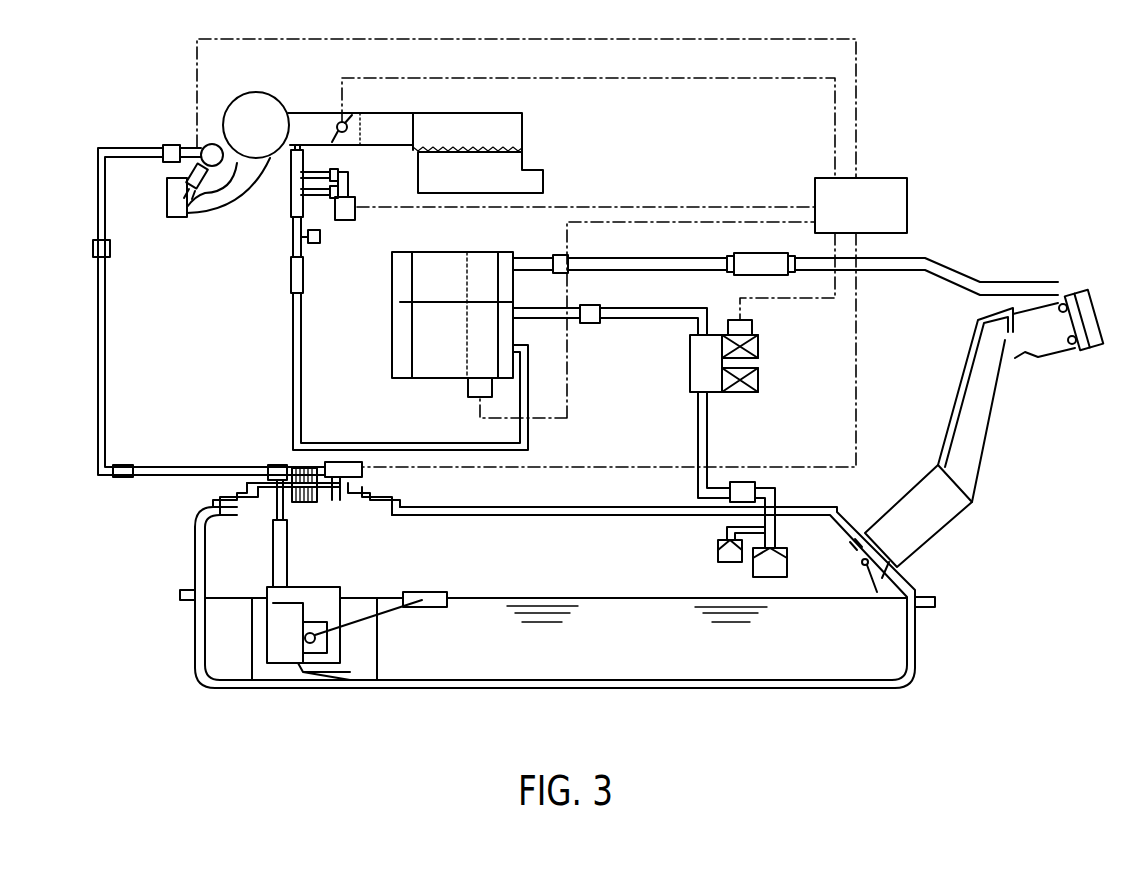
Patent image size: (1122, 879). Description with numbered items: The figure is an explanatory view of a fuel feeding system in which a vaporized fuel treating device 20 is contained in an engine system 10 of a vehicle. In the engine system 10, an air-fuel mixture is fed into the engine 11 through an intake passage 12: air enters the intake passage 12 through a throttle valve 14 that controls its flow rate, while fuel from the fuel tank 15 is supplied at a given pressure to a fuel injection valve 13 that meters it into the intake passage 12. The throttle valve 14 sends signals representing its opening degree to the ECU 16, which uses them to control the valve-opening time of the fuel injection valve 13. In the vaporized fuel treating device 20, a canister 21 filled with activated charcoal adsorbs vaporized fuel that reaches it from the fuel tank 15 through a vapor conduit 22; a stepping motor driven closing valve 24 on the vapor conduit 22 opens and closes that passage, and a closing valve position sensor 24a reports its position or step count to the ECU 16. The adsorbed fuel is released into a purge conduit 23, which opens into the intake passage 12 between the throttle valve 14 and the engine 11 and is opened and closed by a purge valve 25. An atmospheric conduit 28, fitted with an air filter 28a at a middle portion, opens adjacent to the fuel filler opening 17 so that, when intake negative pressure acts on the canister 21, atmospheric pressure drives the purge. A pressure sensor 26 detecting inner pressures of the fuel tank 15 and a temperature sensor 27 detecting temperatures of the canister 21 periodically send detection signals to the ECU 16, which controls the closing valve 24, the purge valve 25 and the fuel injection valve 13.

The engine system 10 is at (107, 100).
The engine 11 is at (176, 207).
The intake passage 12 is at (225, 193).
The fuel injection valve 13 is at (207, 207).
The throttle valve 14 is at (325, 113).
The fuel tank 15 is at (928, 646).
The ECU 16 is at (872, 178).
The fuel filler opening 17 is at (1050, 343).
The vaporized fuel treating device 20 is at (635, 195).
The canister 21 is at (385, 340).
The vapor conduit 22 is at (640, 320).
The purge conduit 23 is at (290, 168).
The stepping motor driven closing valve 24 is at (741, 397).
The closing valve position sensor 24a is at (752, 327).
The purge valve 25 is at (345, 212).
The pressure sensor 26 is at (347, 460).
The temperature sensor 27 is at (472, 387).
The atmospheric conduit 28 is at (660, 265).
The air filter 28a is at (760, 263).